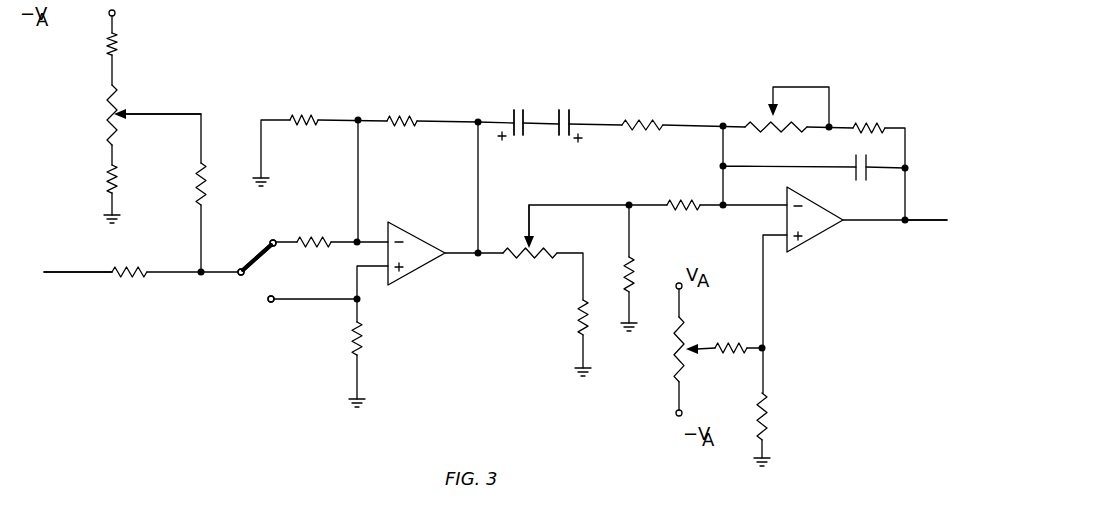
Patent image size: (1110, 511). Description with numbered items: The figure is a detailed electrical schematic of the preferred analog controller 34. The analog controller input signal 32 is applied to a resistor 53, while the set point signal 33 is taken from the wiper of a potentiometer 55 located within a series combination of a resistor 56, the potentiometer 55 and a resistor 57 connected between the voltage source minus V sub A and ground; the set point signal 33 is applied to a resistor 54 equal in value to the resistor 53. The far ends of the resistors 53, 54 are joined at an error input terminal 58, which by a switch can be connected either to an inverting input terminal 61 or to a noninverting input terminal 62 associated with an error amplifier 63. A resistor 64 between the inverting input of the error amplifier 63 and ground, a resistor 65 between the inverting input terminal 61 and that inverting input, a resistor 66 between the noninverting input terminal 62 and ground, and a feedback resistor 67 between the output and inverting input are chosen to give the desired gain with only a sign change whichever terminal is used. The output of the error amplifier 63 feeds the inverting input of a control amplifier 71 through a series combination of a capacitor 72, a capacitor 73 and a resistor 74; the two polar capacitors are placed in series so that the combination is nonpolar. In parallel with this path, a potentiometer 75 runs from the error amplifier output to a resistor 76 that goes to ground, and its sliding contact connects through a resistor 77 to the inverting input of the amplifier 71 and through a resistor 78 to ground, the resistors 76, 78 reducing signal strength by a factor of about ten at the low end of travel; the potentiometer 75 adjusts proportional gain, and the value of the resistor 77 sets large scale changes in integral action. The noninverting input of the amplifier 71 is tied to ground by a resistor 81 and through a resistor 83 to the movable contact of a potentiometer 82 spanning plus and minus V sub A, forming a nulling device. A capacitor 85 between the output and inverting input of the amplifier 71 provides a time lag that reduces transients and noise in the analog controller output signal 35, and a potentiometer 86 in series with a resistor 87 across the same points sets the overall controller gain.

The analog controller input signal 32 is at (98, 270).
The set point signal 33 is at (150, 113).
The analog controller 34 is at (193, 338).
The analog controller output signal 35 is at (928, 219).
The resistor 53 is at (124, 283).
The resistor 54 is at (196, 187).
The potentiometer 55 is at (104, 101).
The resistor 56 is at (115, 52).
The resistor 57 is at (104, 189).
The error input terminal 58 is at (237, 277).
The inverting input terminal 61 is at (270, 240).
The noninverting input terminal 62 is at (277, 306).
The error amplifier 63 is at (403, 228).
The resistor 64 is at (293, 116).
The resistor 65 is at (294, 236).
The resistor 66 is at (363, 342).
The feedback resistor 67 is at (397, 114).
The control amplifier 71 is at (808, 244).
The capacitor 72 is at (509, 110).
The capacitor 73 is at (557, 110).
The resistor 74 is at (653, 114).
The potentiometer 75 is at (539, 267).
The resistor 76 is at (577, 320).
The resistor 77 is at (681, 200).
The resistor 78 is at (628, 262).
The resistor 81 is at (778, 422).
The potentiometer 82 is at (670, 370).
The resistor 83 is at (737, 346).
The capacitor 85 is at (849, 176).
The potentiometer 86 is at (756, 120).
The resistor 87 is at (863, 119).